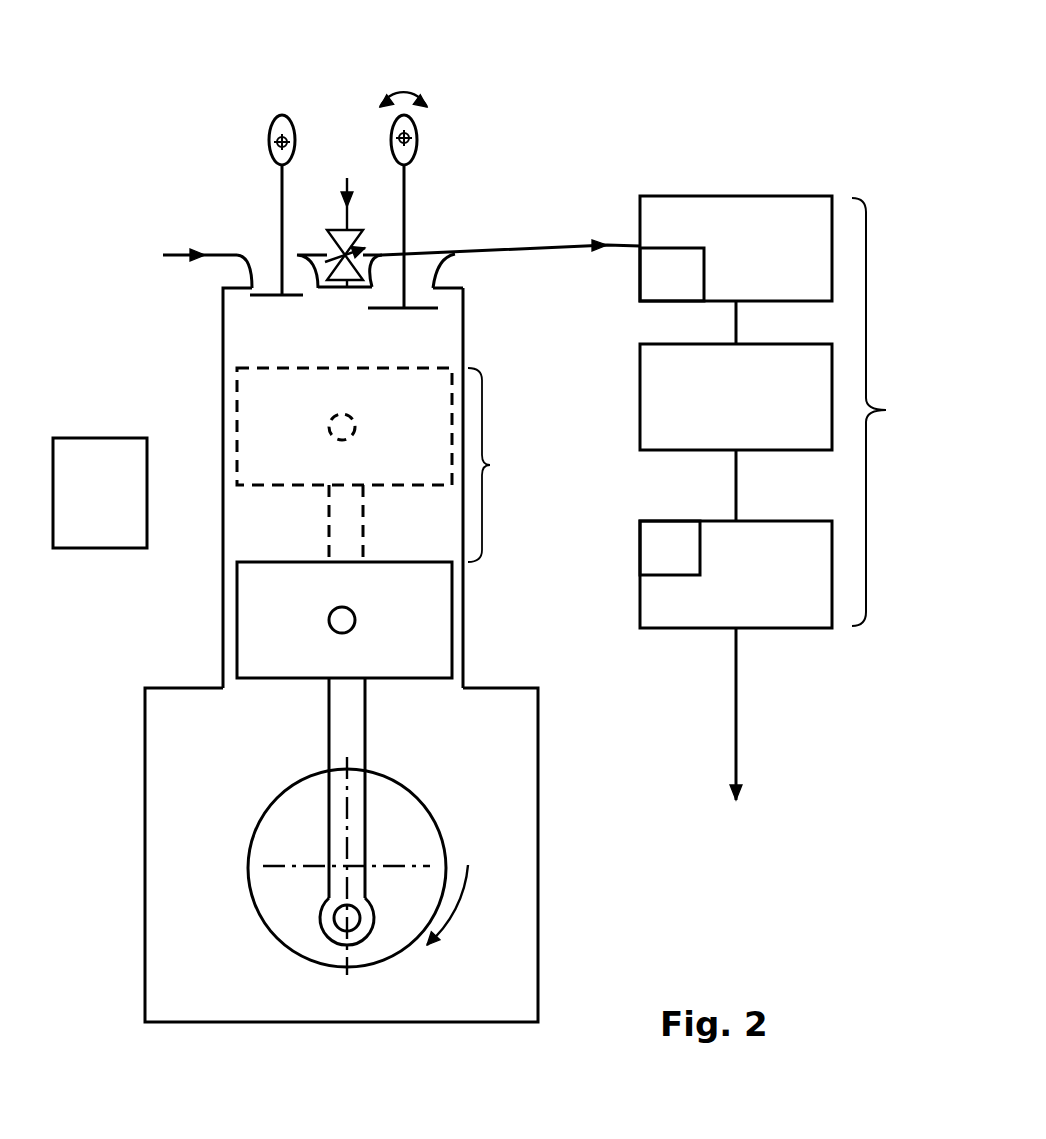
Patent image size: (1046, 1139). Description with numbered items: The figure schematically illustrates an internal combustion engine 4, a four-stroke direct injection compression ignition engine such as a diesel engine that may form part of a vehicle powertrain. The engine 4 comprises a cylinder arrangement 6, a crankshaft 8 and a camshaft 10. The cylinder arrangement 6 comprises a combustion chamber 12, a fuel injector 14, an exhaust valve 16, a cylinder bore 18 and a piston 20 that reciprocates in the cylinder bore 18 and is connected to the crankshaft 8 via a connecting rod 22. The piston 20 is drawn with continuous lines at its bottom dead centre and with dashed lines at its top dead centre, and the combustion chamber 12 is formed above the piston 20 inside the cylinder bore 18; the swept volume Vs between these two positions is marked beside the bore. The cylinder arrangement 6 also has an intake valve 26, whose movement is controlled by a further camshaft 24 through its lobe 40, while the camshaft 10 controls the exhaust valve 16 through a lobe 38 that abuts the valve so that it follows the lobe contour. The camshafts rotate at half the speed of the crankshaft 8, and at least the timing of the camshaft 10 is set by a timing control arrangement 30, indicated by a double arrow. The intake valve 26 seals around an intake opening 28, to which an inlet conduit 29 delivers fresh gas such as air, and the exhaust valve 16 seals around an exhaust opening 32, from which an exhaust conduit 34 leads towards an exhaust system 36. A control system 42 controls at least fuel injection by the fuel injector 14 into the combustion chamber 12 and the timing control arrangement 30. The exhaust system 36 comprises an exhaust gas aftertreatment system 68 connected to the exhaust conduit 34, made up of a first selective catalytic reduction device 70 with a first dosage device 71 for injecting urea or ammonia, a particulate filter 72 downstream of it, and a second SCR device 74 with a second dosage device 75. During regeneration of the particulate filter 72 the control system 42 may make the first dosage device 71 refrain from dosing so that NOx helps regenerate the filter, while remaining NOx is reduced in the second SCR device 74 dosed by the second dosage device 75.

The internal combustion engine 4 is at (661, 99).
The cylinder arrangement 6 is at (548, 428).
The crankshaft 8 is at (420, 827).
The camshaft 10 is at (417, 131).
The combustion chamber 12 is at (288, 351).
The fuel injector 14 is at (340, 233).
The exhaust valve 16 is at (407, 202).
The cylinder bore 18 is at (463, 622).
The piston 20 is at (423, 444).
The connecting rod 22 is at (357, 723).
The further camshaft 24 is at (295, 131).
The intake valve 26 is at (280, 213).
The intake opening 28 is at (314, 291).
The inlet conduit 29 is at (180, 262).
The timing control arrangement 30 is at (403, 90).
The exhaust opening 32 is at (388, 303).
The exhaust conduit 34 is at (571, 251).
The exhaust system 36 is at (814, 710).
The lobe 38 is at (410, 155).
The lobe 40 is at (272, 126).
The control system 42 is at (118, 511).
The exhaust gas aftertreatment system 68 is at (794, 412).
The first selective catalytic reduction device 70 is at (749, 257).
The first dosage device 71 is at (688, 289).
The particulate filter 72 is at (750, 406).
The second SCR device 74 is at (754, 586).
The second dosage device 75 is at (687, 563).